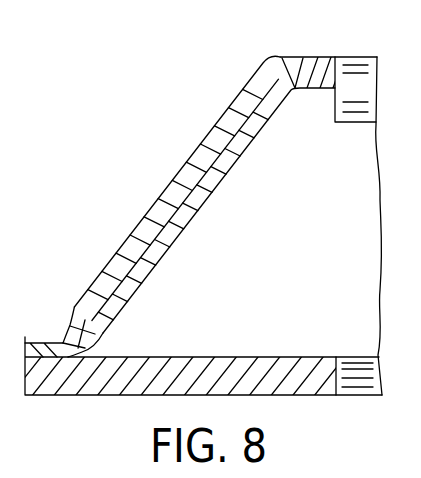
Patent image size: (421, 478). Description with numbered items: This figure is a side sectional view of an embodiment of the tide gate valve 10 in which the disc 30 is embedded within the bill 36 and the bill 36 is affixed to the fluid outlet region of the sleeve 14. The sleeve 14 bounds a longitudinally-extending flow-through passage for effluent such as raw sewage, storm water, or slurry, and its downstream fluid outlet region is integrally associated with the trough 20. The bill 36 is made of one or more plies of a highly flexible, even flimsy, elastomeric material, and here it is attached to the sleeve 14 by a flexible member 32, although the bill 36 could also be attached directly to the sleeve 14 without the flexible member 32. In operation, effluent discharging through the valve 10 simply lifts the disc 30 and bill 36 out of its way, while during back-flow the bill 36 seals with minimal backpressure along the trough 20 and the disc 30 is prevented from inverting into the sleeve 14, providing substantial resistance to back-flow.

The valve 10 is at (124, 122).
The sleeve 14 is at (358, 108).
The trough 20 is at (88, 397).
The disc 30 is at (200, 159).
The flexible member 32 is at (294, 57).
The bill 36 is at (127, 243).